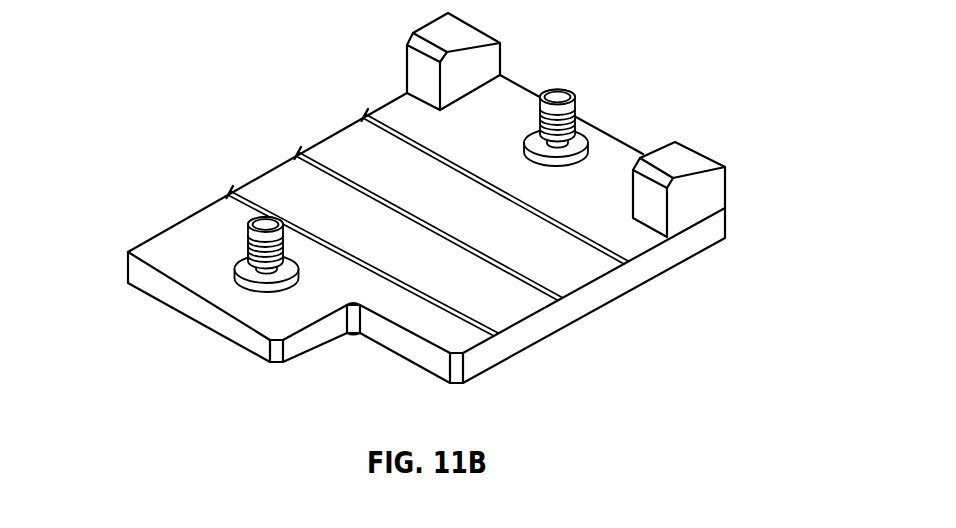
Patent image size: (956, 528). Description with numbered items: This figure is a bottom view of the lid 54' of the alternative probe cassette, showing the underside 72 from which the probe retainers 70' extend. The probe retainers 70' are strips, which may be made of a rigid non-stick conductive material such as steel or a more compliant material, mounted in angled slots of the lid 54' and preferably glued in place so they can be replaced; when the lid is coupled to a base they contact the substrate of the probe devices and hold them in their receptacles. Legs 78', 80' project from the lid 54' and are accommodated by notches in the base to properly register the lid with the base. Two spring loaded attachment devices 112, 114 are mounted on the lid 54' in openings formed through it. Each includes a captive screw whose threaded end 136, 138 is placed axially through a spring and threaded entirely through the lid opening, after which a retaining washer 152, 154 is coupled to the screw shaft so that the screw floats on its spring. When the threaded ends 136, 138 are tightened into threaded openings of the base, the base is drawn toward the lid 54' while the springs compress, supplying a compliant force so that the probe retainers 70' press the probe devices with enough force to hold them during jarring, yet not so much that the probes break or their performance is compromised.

The lid 54' is at (449, 229).
The probe retainers 70' is at (467, 242).
The underside 72 is at (348, 145).
The leg 78' is at (683, 179).
The leg 80' is at (460, 55).
The spring loaded attachment device 112 is at (558, 102).
The spring loaded attachment device 114 is at (203, 259).
The threaded end 136 is at (538, 115).
The threaded end 138 is at (247, 231).
The retaining washer 152 is at (578, 144).
The washer 154 is at (238, 285).